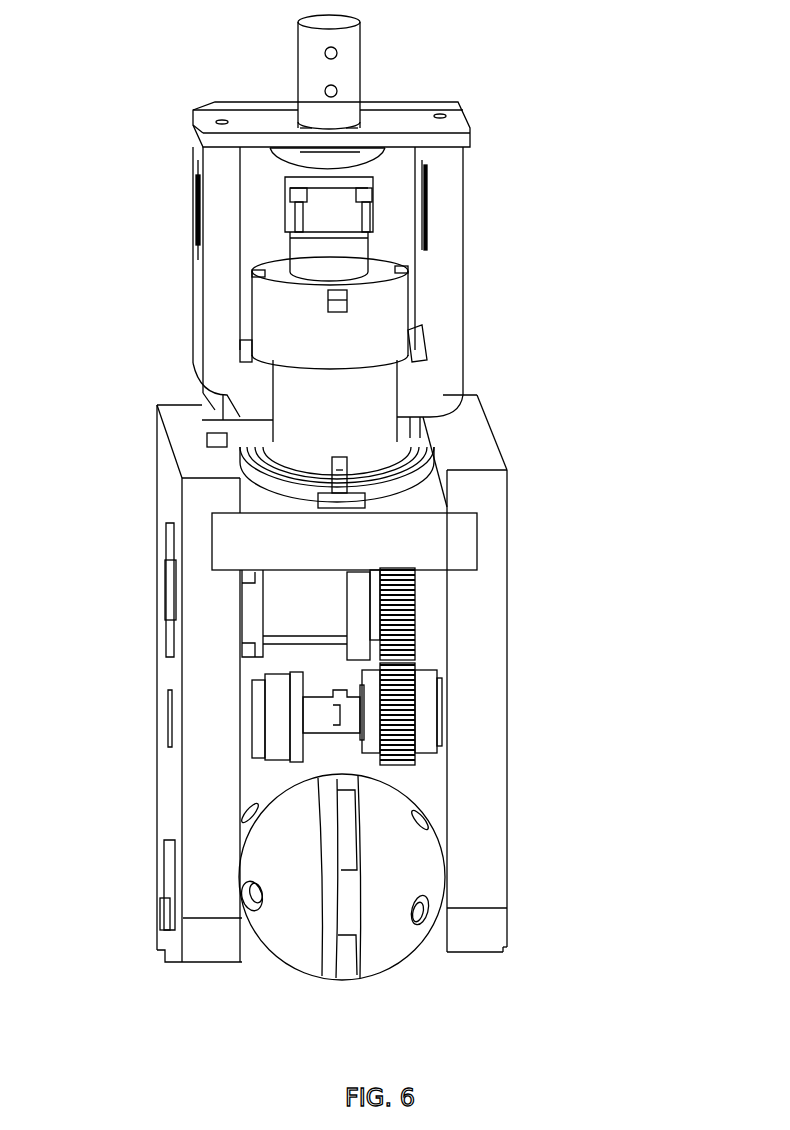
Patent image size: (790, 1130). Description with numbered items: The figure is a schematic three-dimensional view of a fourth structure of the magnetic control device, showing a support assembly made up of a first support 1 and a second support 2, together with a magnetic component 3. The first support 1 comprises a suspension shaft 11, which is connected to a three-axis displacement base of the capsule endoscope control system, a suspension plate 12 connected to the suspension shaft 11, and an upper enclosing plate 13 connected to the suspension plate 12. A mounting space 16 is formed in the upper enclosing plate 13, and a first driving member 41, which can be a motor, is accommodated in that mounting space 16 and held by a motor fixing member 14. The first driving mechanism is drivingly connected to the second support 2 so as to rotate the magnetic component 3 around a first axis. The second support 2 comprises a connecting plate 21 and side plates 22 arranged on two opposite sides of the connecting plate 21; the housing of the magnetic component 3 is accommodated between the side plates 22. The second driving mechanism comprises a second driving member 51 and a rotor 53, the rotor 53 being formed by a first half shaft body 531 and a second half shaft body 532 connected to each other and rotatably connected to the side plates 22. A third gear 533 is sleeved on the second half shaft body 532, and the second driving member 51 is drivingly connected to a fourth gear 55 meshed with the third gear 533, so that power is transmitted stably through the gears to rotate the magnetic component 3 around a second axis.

The first support 1 is at (92, 150).
The suspension shaft 11 is at (310, 100).
The suspension plate 12 is at (203, 158).
The upper enclosing plate 13 is at (224, 237).
The motor fixing member 14 is at (267, 338).
The mounting space 16 is at (267, 173).
The first driving member 41 is at (347, 230).
The second support 2 is at (630, 493).
The connecting plate 21 is at (433, 518).
The side plates 22 is at (473, 585).
The second driving member 51 is at (302, 602).
The fourth gear 55 is at (418, 628).
The rotor 53 is at (618, 868).
The first half shaft body 531 is at (405, 780).
The second half shaft body 532 is at (417, 730).
The third gear 533 is at (418, 697).
The magnetic component 3 is at (320, 1000).